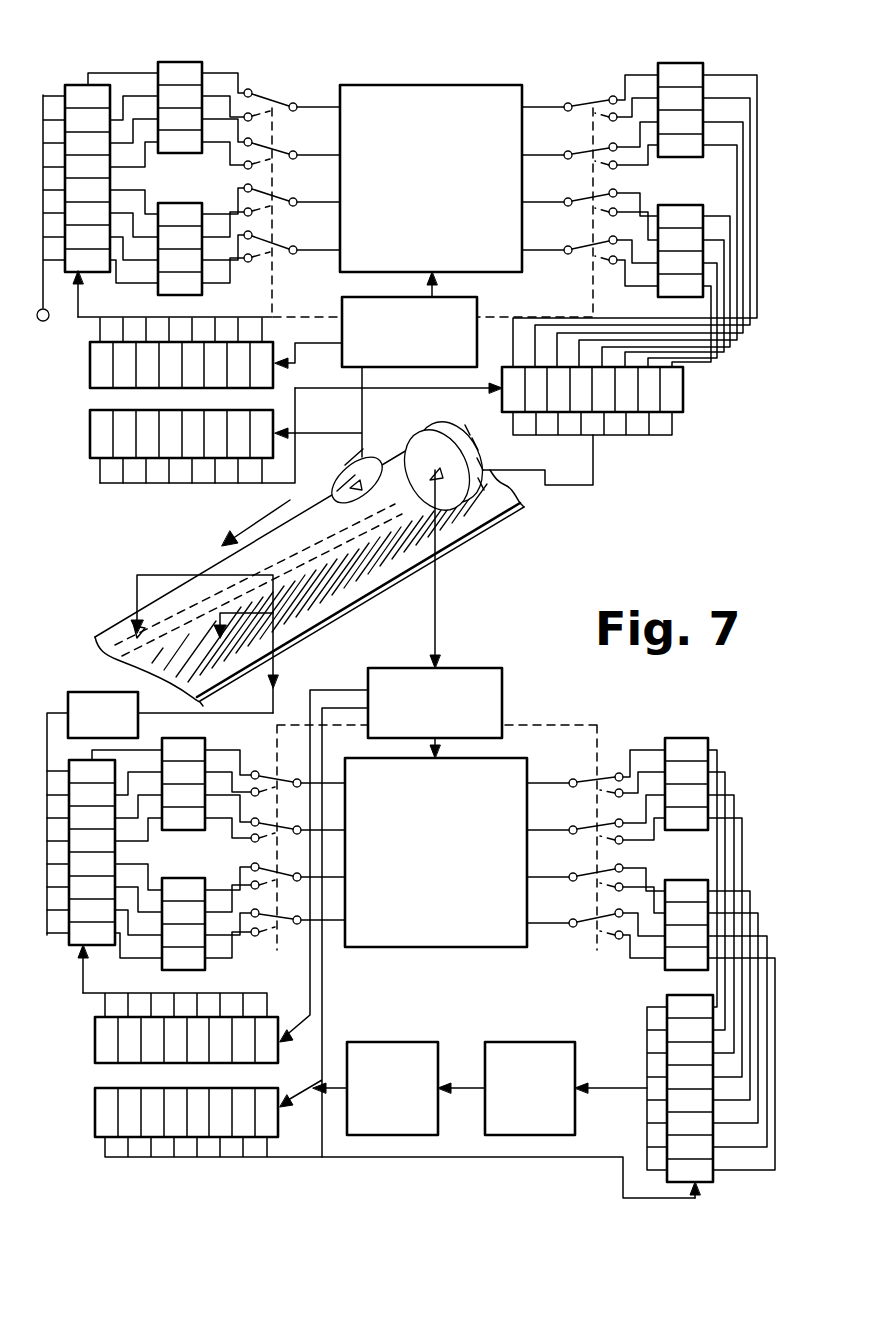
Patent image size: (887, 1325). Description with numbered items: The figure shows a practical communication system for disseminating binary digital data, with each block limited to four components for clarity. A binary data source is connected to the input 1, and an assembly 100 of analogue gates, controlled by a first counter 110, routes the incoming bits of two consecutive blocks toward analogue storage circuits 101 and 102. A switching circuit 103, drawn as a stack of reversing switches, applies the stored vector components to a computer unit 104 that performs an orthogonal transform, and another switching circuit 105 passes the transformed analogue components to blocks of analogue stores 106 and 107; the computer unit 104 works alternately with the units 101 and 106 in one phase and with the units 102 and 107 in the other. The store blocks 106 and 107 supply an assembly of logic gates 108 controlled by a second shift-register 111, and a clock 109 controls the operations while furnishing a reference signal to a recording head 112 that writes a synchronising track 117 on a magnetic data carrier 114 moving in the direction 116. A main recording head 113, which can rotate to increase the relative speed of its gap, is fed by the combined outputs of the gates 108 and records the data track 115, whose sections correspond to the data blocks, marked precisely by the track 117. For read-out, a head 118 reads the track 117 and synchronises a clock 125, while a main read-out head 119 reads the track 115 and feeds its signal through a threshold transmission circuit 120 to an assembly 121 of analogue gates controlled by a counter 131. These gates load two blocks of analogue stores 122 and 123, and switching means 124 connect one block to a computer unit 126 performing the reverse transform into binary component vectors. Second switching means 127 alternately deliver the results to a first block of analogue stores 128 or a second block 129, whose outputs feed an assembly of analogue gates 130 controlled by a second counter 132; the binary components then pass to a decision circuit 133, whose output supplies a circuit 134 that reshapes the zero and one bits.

The input 1 is at (47, 322).
The assembly of analogue gates 100 is at (80, 84).
The analogue storage circuit 101 is at (197, 51).
The analogue storage circuit 102 is at (268, 58).
The switching circuit 103 is at (252, 90).
The computer unit 104 is at (450, 84).
The switching circuit 105 is at (572, 100).
The block of analogue stores 106 is at (688, 63).
The block of analogue stores 107 is at (675, 205).
The assembly of logic gates 108 is at (686, 388).
The clock 109 is at (345, 298).
The first counter 110 is at (90, 375).
The second shift-register 111 is at (180, 512).
The recording head 112 is at (375, 460).
The main recording head 113 is at (423, 440).
The magnetic data carrier 114 is at (520, 505).
The track 115 is at (437, 540).
The direction of displacement 116 is at (274, 520).
The synchronising track 117 is at (173, 600).
The read-out head 118 is at (128, 625).
The main read-out head 119 is at (268, 640).
The threshold transmission circuit 120 is at (55, 595).
The assembly of analogue gates 121 is at (75, 947).
The block of analogue stores 122 is at (202, 740).
The block of analogue stores 123 is at (352, 672).
The switching means 124 is at (258, 936).
The clock 125 is at (462, 667).
The computer unit 126 is at (485, 947).
The second switching means 127 is at (567, 773).
The first block of analogue stores 128 is at (672, 770).
The second block of analogue stores 129 is at (645, 743).
The assembly of analogue gates 130 is at (670, 992).
The counter 131 is at (95, 1040).
The second counter 132 is at (235, 1190).
The decision circuit 133 is at (543, 1042).
The reshaping circuit 134 is at (400, 1042).